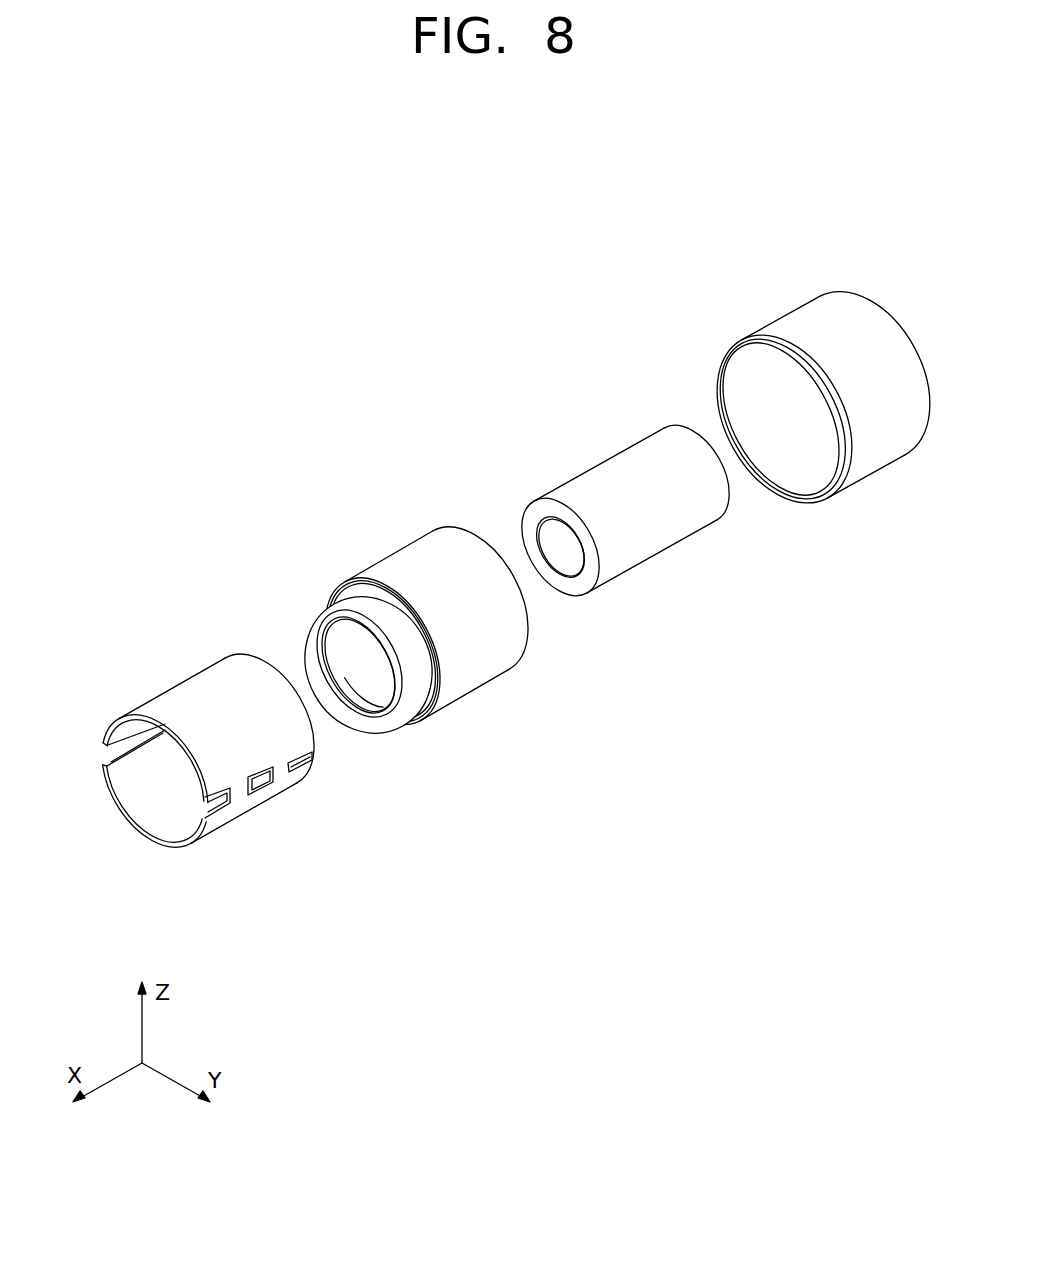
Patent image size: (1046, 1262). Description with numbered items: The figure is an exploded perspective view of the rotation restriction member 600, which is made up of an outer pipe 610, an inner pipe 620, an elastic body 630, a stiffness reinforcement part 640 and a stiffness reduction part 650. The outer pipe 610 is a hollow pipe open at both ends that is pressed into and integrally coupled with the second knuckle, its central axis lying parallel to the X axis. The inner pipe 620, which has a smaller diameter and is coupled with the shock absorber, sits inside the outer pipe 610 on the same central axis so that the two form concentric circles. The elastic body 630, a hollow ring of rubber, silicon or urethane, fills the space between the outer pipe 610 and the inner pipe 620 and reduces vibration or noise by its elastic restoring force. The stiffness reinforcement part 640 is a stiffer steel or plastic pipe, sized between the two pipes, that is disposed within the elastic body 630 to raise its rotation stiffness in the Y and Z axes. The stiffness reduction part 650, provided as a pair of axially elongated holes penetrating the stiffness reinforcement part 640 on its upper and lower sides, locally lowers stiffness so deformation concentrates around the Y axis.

The rotation restriction member 600 is at (117, 270).
The outer pipe 610 is at (883, 457).
The inner pipe 620 is at (665, 530).
The elastic body 630 is at (475, 670).
The stiffness reinforcement part 640 is at (265, 737).
The stiffness reduction part 650 is at (210, 803).